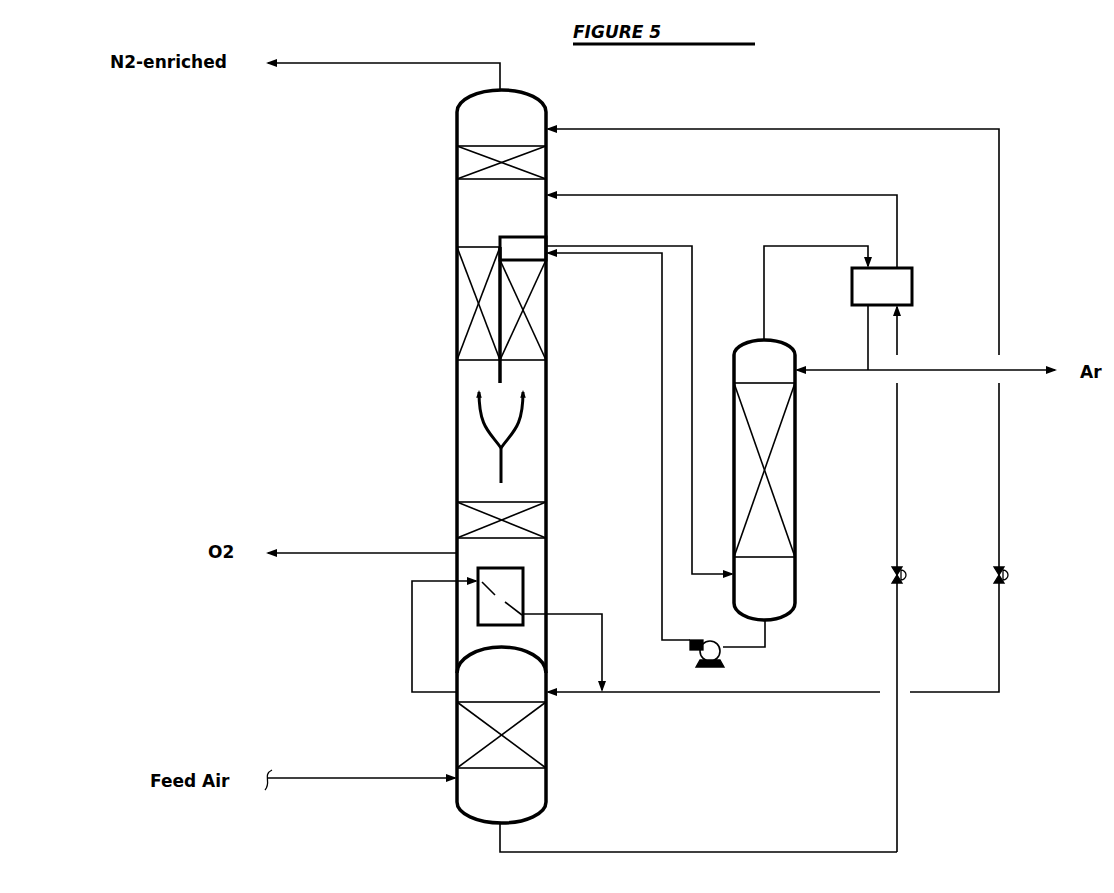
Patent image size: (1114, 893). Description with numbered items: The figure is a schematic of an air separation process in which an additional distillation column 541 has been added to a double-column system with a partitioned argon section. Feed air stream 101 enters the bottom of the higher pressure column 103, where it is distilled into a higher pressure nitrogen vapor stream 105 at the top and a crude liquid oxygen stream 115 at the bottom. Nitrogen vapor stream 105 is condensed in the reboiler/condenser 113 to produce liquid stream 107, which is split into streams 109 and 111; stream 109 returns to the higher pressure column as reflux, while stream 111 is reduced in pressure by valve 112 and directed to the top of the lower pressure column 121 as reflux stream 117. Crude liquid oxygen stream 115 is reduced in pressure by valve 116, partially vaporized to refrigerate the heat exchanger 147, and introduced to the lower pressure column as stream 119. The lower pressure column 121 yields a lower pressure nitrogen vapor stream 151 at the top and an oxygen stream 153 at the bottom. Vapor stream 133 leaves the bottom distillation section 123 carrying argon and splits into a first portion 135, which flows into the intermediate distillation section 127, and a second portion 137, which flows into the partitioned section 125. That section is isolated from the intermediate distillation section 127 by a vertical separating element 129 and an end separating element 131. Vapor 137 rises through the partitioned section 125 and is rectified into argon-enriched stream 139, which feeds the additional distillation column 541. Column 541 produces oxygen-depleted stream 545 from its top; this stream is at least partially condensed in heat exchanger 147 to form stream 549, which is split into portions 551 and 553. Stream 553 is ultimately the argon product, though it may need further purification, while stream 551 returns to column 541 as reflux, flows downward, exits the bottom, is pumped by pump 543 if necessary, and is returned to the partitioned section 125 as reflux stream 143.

The feed air stream 101 is at (363, 792).
The higher pressure column 103 is at (546, 735).
The higher pressure nitrogen vapor stream 105 is at (412, 660).
The liquid stream 107 is at (602, 614).
The reflux stream 109 is at (580, 694).
The lower pressure column reflux stream 111 is at (1024, 648).
The valve 112 is at (1008, 575).
The reboiler/condenser 113 is at (523, 588).
The crude liquid oxygen stream 115 is at (570, 852).
The valve 116 is at (906, 575).
The reflux stream 117 is at (626, 129).
The lower pressure column feed stream 119 is at (626, 195).
The lower pressure column 121 is at (458, 126).
The bottom distillation section 123 is at (540, 522).
The partitioned section 125 is at (523, 352).
The intermediate distillation section 127 is at (468, 303).
The vertical separating element 129 is at (498, 370).
The end separating element 131 is at (500, 240).
The vapor stream 133 is at (497, 465).
The first portion 135 is at (477, 413).
The second portion 137 is at (523, 413).
The argon-enriched stream 139 is at (590, 246).
The reflux stream 143 is at (662, 352).
The heat exchanger 147 is at (940, 278).
The lower pressure nitrogen vapor stream 151 is at (318, 63).
The oxygen stream 153 is at (310, 554).
The additional distillation column 541 is at (822, 481).
The pump 543 is at (718, 641).
The oxygen-depleted stream 545 is at (764, 290).
The condensed stream 549 is at (868, 345).
The reflux portion 551 is at (832, 372).
The argon product stream 553 is at (938, 372).